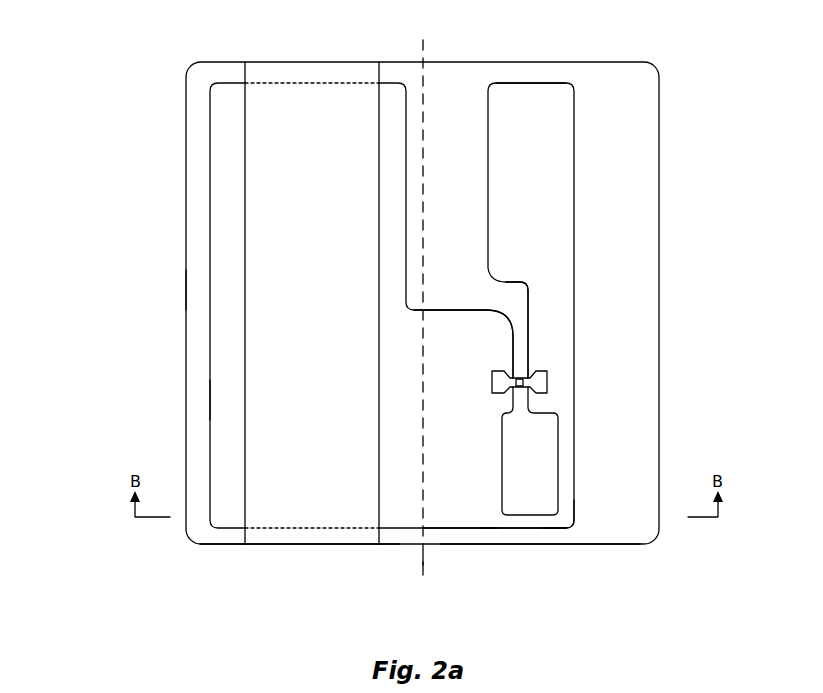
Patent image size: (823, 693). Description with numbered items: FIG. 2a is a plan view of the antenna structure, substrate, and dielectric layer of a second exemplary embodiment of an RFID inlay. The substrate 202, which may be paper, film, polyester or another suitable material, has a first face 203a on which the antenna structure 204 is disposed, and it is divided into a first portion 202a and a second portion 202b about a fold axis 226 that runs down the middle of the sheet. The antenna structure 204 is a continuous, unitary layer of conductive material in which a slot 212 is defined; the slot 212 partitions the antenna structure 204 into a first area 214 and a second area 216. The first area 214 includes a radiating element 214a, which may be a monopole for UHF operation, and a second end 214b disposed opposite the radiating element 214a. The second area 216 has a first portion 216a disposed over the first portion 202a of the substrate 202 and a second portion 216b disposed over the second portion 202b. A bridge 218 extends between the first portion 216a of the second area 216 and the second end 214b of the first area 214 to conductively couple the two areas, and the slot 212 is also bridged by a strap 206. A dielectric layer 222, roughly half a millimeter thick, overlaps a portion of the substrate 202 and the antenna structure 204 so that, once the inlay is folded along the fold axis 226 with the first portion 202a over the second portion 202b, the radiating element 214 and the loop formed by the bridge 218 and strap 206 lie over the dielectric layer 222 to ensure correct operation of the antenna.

The substrate 202 is at (203, 72).
The first portion of substrate 202a is at (550, 588).
The second portion of substrate 202b is at (314, 583).
The first face 203a is at (398, 68).
The antenna structure 204 is at (231, 289).
The strap 206 is at (570, 394).
The slot 212 is at (472, 291).
The first area 214 is at (548, 203).
The radiating element 214a is at (532, 115).
The second end of first area 214b is at (563, 509).
The second area 216 is at (229, 197).
The first portion of second area 216a is at (470, 494).
The second portion of second area 216b is at (223, 397).
The bridge 218 is at (528, 523).
The dielectric layer 222 is at (331, 267).
The fold axis 226 is at (420, 560).